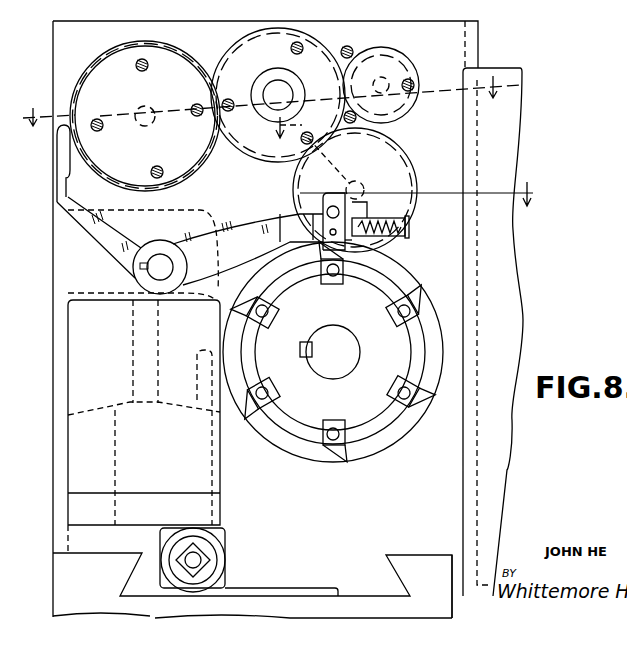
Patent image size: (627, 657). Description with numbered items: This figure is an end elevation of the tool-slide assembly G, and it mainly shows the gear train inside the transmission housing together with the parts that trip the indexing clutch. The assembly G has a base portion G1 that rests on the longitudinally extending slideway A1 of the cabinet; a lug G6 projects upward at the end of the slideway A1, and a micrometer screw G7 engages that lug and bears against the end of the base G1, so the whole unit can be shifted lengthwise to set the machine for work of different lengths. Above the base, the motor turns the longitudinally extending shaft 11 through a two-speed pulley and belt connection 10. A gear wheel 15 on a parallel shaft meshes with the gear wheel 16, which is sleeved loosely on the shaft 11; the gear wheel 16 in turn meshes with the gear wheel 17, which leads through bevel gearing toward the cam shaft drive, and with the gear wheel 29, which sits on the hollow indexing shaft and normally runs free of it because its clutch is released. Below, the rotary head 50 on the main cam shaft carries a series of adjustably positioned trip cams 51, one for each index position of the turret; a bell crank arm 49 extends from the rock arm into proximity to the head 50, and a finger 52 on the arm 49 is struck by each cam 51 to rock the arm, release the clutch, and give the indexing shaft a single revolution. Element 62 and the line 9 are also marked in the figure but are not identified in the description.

The gear wheel 29 is at (165, 48).
The shaft 11 is at (278, 92).
The gear wheel 16 is at (322, 36).
The gear wheel 15 is at (392, 52).
The gear wheel 17 is at (403, 155).
The bell crank arm 49 is at (232, 222).
The rotary head 50 is at (333, 352).
The trip cams 51 is at (244, 302).
The finger 52 is at (353, 258).
The cover plate 62 is at (497, 273).
The assembly G is at (527, 328).
The base portion G1 is at (388, 586).
The lug G6 is at (222, 580).
The micrometer screw G7 is at (198, 556).
The slideway A1 is at (445, 601).
The section line 9- 9 is at (261, 102).
The two speed pulley and belt connection 10 is at (406, 161).